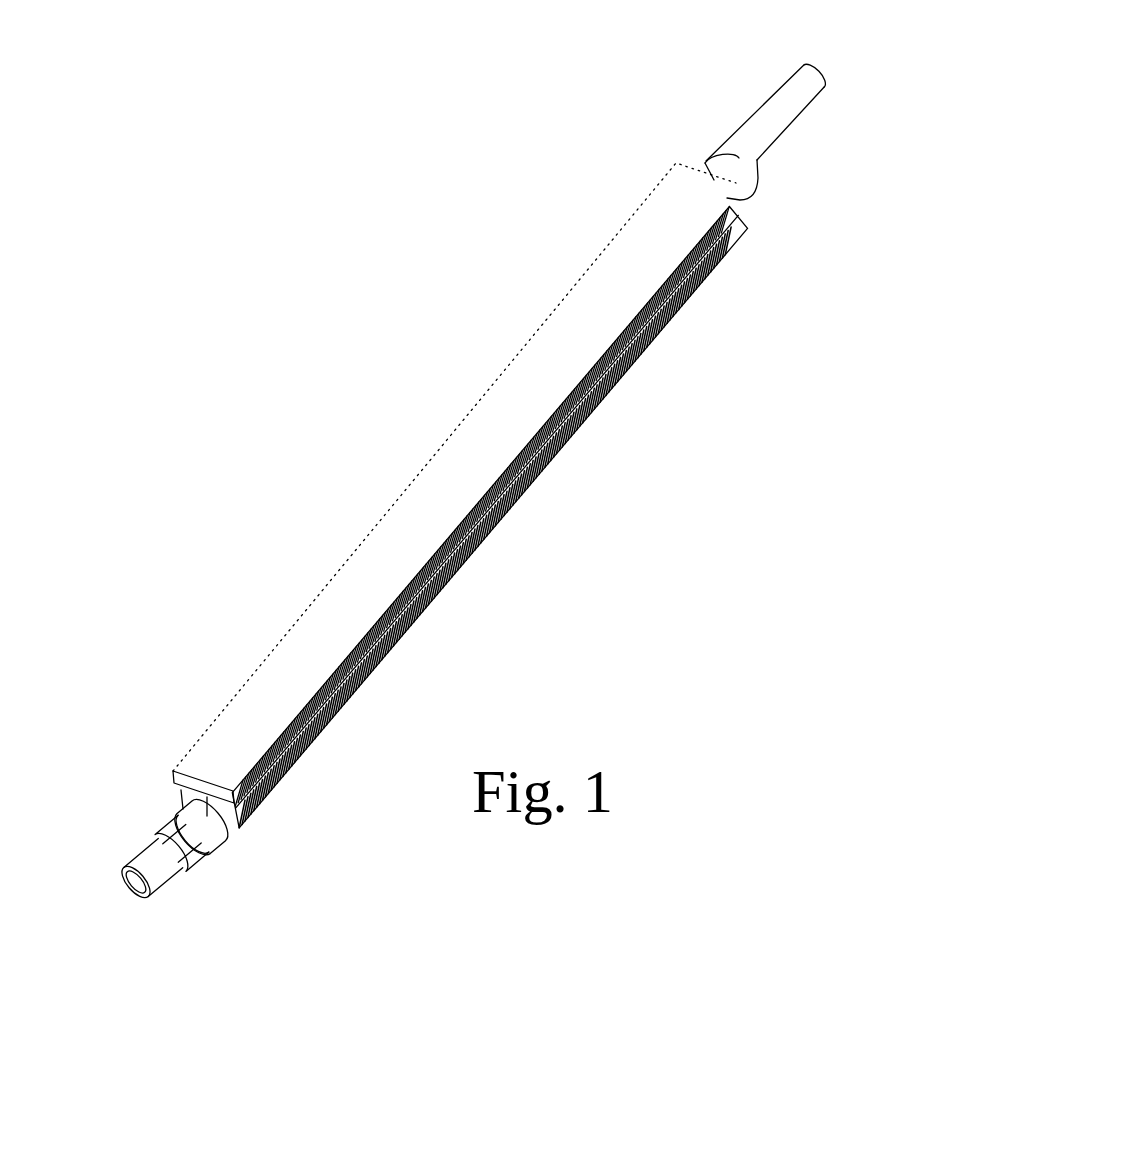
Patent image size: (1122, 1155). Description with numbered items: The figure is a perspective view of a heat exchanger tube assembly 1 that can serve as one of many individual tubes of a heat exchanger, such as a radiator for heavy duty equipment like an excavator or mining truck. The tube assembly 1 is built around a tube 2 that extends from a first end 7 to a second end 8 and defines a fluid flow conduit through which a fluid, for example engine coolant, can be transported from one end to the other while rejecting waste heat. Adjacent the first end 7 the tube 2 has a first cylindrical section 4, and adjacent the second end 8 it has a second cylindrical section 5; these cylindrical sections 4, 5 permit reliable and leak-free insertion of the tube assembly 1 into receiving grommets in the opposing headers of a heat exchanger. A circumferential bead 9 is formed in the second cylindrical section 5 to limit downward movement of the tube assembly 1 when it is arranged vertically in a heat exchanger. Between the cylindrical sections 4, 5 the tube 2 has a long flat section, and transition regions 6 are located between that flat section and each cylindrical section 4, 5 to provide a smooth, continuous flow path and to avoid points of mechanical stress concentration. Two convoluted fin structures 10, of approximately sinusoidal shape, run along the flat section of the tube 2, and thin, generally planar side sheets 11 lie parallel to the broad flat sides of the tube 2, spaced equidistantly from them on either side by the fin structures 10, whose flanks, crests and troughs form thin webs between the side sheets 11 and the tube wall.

The heat exchanger tube assembly 1 is at (462, 256).
The tube 2 is at (218, 832).
The first cylindrical section 4 is at (775, 107).
The second cylindrical section 5 is at (160, 882).
The transition region 6 is at (727, 172).
The first end 7 is at (828, 90).
The second end 8 is at (117, 873).
The circumferential bead 9 is at (185, 867).
The convoluted fin structure 10 is at (460, 567).
The side sheet 11 is at (274, 671).